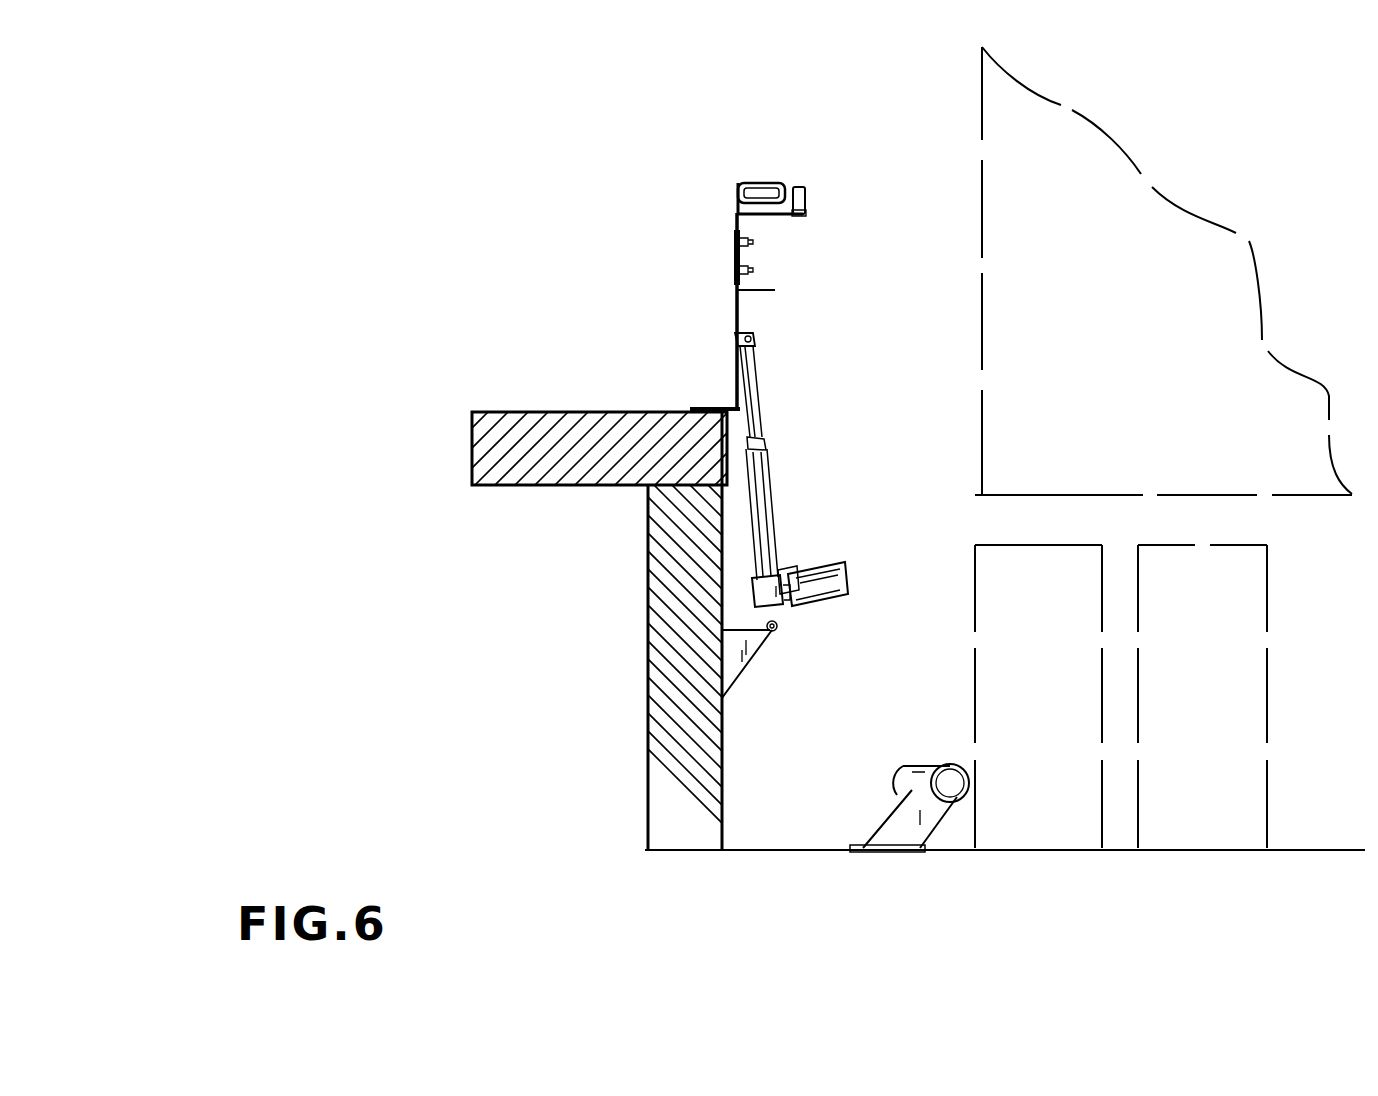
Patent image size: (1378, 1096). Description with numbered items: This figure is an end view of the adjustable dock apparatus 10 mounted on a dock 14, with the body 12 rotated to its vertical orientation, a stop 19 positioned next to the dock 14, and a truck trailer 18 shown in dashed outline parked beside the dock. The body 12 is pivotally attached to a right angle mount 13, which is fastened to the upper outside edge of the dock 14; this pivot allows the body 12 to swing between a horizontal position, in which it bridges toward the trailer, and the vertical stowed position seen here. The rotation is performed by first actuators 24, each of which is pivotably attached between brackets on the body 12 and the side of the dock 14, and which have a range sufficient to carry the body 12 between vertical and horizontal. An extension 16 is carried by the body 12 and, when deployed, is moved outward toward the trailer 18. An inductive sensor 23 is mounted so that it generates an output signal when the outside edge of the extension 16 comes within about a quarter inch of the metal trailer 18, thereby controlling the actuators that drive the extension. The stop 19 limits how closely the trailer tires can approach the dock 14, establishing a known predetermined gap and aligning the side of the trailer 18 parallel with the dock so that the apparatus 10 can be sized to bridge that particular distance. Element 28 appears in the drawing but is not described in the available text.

The adjustable dock apparatus 10 is at (790, 400).
The body 12 is at (737, 320).
The right angle mount 13 is at (713, 406).
The dock 14 is at (500, 420).
The extension 16 is at (737, 213).
The truck trailer 18 is at (1107, 361).
The stop 19 is at (915, 806).
The inductive sensor 23 is at (805, 198).
The first actuator 24 is at (770, 517).
The handle 28 is at (760, 183).